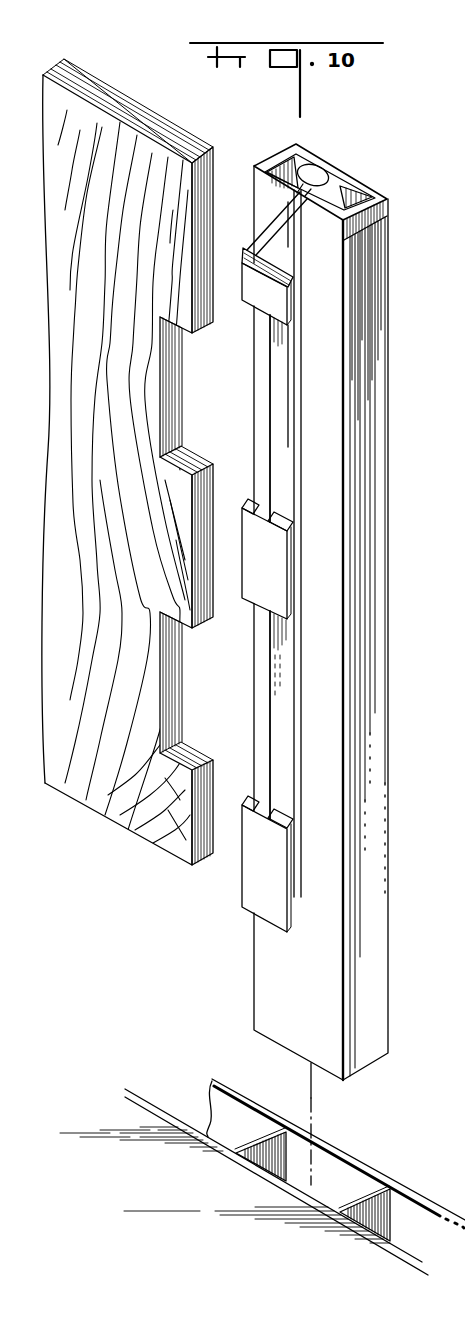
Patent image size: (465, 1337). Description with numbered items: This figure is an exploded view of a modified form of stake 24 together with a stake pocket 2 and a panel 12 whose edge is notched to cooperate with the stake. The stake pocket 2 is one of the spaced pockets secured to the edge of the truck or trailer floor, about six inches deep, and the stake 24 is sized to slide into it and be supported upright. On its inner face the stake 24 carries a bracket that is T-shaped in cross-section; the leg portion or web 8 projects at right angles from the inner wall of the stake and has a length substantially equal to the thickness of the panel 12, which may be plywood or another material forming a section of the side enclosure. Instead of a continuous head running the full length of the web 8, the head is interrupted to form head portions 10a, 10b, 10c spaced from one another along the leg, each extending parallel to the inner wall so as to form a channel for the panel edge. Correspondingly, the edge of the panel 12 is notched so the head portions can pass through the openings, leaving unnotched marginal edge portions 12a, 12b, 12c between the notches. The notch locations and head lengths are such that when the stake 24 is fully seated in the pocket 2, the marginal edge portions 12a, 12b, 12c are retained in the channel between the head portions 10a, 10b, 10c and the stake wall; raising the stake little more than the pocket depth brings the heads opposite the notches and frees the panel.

The stake pocket 2 is at (364, 1161).
The leg portion or web 8 is at (290, 450).
The head portion 10a is at (267, 293).
The head portion 10b is at (260, 580).
The head portion 10c is at (253, 883).
The panel 12 is at (158, 442).
The unnotched marginal edge portion 12a is at (205, 173).
The unnotched marginal edge portion 12b is at (205, 500).
The unnotched marginal edge portion 12c is at (208, 787).
The stake 24 is at (351, 612).